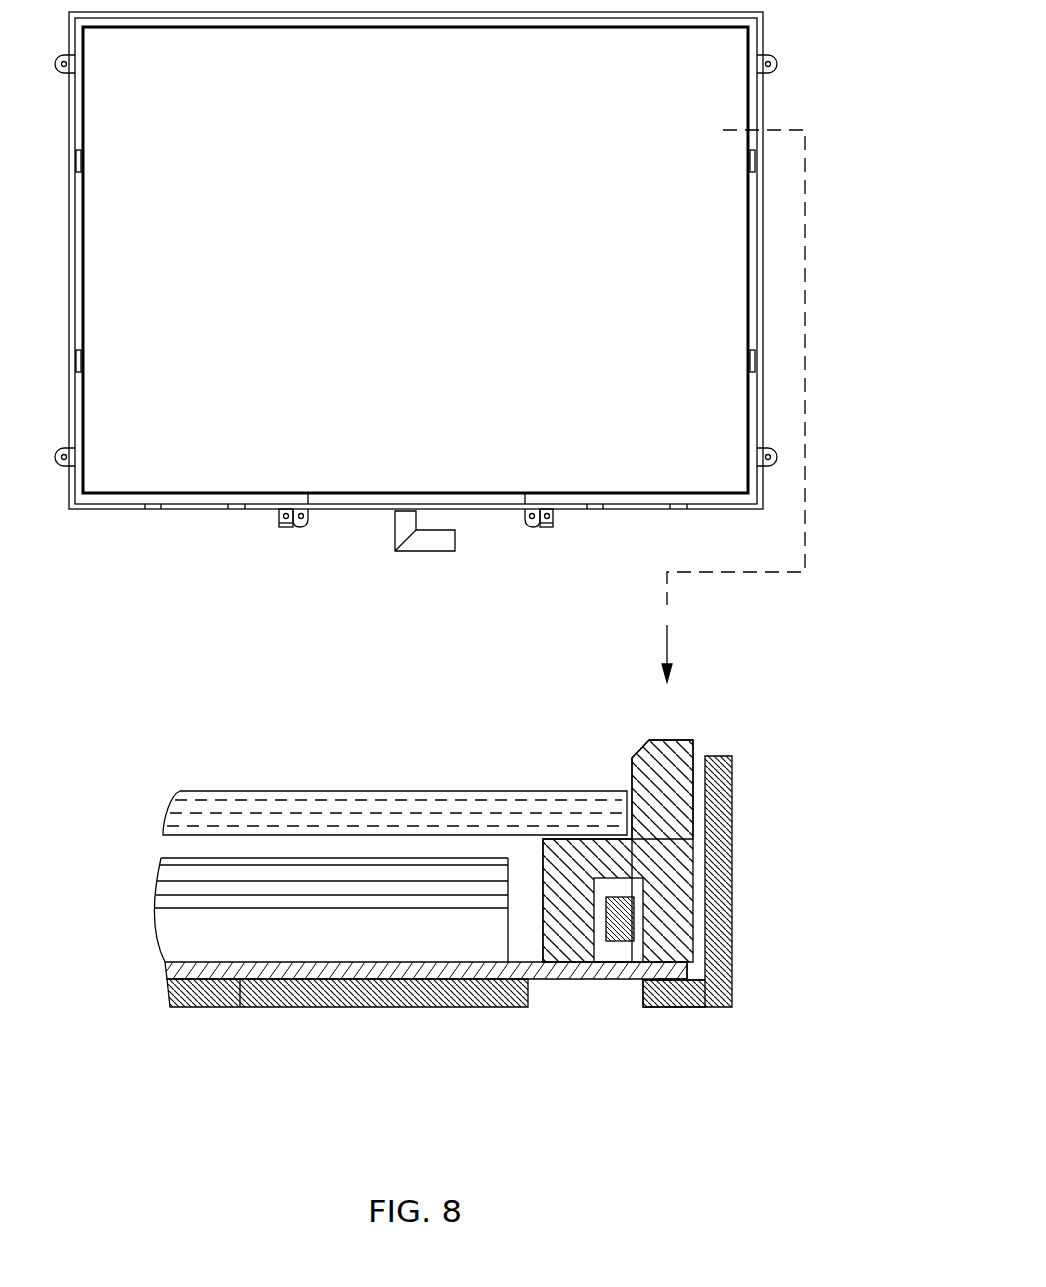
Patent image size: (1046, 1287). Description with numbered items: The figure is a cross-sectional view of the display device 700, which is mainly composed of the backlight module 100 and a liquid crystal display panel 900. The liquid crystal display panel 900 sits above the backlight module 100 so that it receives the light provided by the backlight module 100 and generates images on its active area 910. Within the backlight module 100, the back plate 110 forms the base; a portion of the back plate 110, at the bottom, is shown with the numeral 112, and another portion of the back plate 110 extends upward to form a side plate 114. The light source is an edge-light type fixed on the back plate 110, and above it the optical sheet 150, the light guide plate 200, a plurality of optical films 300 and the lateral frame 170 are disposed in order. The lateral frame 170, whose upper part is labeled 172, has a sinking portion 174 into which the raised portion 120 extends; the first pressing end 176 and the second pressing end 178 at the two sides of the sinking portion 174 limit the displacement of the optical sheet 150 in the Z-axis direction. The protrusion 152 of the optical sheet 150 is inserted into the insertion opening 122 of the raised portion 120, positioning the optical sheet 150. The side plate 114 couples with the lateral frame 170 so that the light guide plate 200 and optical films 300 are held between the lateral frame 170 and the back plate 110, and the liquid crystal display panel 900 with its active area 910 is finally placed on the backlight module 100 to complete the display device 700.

The display device 700 is at (276, 225).
The liquid crystal display panel 900 is at (386, 785).
The active area 910 is at (298, 790).
The backlight module 100 is at (366, 997).
The optical films 300 is at (149, 856).
The light guide plate 200 is at (163, 934).
The optical sheet 150 is at (167, 970).
The back plate 110 is at (172, 1000).
The back plate bottom portion 112 is at (247, 1007).
The side plate 114 is at (723, 790).
The lateral frame 170 is at (614, 877).
The frame top portion 172 is at (637, 766).
The sinking portion 174 is at (598, 956).
The first pressing end 176 is at (568, 965).
The raised portion 120 is at (623, 910).
The insertion opening 122 is at (642, 956).
The protrusion 152 is at (658, 973).
The second pressing end 178 is at (675, 1005).